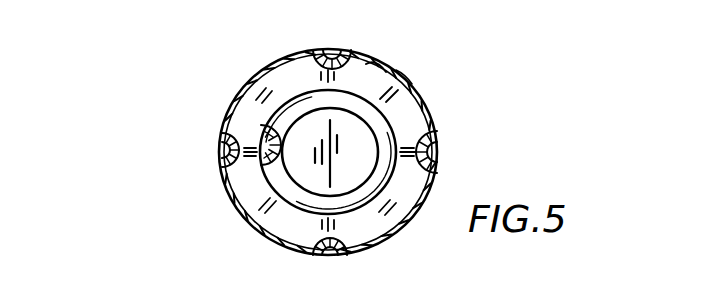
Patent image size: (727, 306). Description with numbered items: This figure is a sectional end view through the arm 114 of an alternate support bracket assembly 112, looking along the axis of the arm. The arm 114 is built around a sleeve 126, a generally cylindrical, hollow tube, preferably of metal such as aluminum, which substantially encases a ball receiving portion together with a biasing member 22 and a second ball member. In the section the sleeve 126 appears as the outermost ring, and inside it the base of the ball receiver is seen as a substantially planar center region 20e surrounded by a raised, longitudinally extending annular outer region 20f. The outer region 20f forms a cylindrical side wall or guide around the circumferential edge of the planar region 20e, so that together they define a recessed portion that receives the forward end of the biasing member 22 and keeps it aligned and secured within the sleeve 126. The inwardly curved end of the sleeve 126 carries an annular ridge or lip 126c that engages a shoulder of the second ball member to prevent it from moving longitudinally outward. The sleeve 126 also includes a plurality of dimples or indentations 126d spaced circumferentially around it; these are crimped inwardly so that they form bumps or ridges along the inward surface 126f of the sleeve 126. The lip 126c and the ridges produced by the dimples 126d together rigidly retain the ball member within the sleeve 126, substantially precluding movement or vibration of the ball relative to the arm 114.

The support bracket assembly 112 is at (82, 139).
The arm 114 is at (447, 101).
The sleeve 126 is at (402, 80).
The annular ridge or lip 126c is at (353, 50).
The dimples or indentations 126d is at (330, 253).
The inward surface 126f is at (388, 64).
The biasing member 22 is at (264, 140).
The planar center region 20e is at (317, 177).
The annular outer region 20f is at (248, 183).